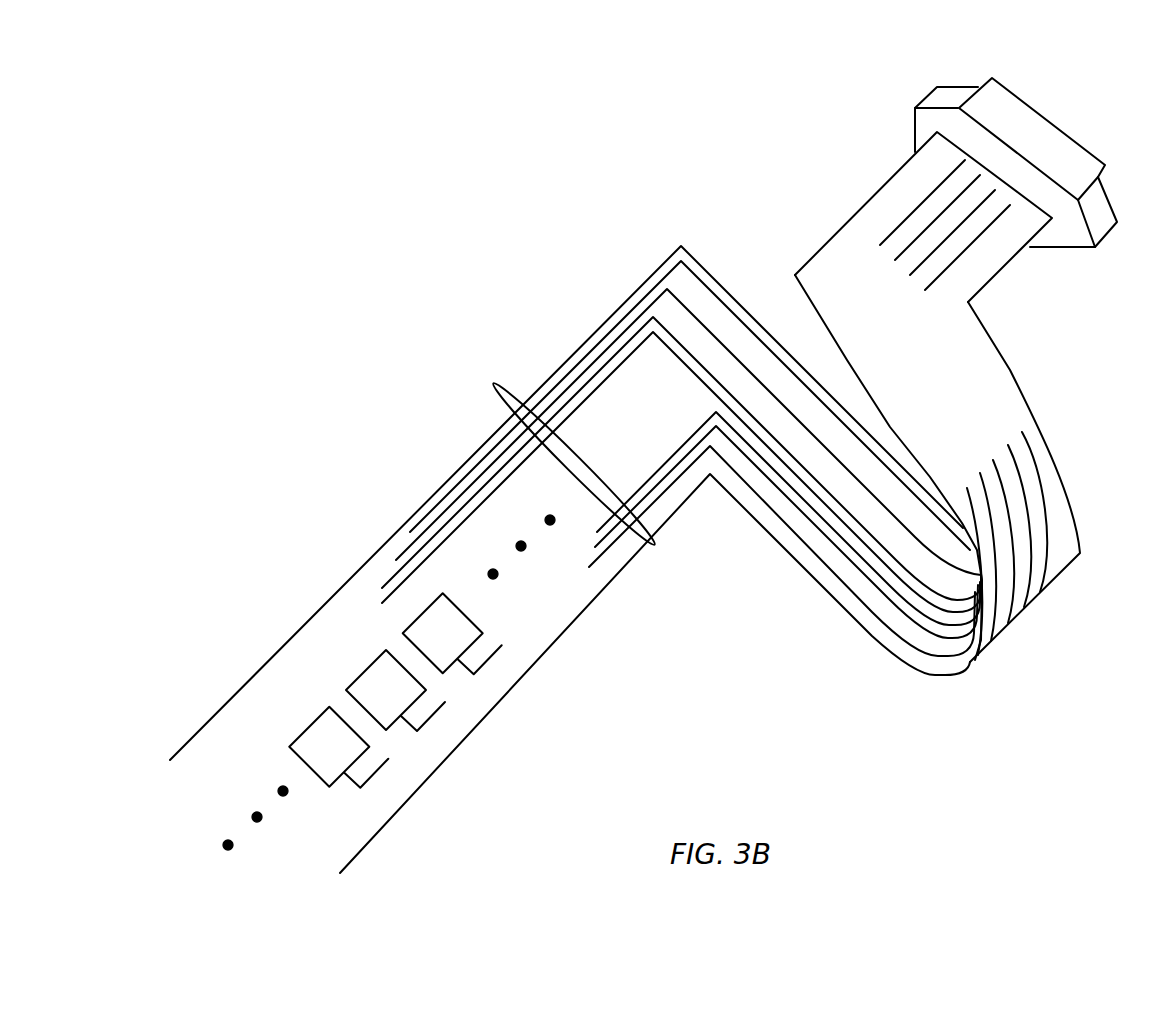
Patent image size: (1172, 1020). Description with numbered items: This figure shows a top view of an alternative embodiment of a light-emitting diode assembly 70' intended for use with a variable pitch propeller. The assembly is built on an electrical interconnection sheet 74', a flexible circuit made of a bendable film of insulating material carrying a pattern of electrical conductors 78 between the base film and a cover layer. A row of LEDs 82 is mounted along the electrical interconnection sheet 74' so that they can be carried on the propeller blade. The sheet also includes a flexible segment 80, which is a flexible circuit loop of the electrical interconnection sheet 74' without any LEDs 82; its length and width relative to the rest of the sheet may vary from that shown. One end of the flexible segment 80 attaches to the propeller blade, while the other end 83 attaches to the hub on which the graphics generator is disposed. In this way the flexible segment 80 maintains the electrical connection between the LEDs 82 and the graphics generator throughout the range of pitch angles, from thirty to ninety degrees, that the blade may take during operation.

The light-emitting diode assembly 70' is at (549, 504).
The electrical interconnection sheet 74' is at (570, 559).
The electrical conductors 78 is at (492, 383).
The flexible segment 80 is at (1065, 545).
The LEDs 82 is at (395, 690).
The end of the flexible segment 83 is at (1072, 152).